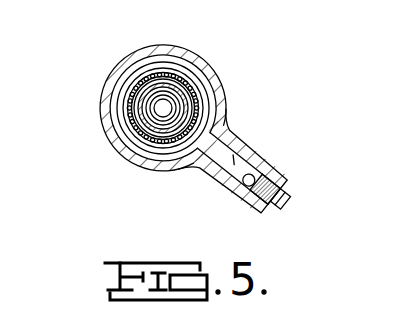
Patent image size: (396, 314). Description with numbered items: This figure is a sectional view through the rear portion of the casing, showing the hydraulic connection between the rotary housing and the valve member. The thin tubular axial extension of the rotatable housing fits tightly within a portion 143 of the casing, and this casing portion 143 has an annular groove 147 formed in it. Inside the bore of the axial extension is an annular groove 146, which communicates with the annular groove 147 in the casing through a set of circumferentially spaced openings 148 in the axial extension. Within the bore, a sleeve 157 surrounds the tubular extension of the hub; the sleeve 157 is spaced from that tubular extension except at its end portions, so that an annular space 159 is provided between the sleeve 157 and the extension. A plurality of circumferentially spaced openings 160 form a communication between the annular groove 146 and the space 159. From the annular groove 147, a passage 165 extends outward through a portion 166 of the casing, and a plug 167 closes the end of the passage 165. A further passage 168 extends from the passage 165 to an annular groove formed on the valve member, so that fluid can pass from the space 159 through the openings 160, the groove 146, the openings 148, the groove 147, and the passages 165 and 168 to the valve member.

The portion of the casing 143 is at (119, 66).
The annular groove 146 is at (191, 84).
The annular groove 147 is at (153, 49).
The openings 148 is at (167, 85).
The sleeve 157 is at (163, 108).
The space 159 is at (163, 108).
The openings 160 is at (218, 89).
The passage 165 is at (228, 142).
The portion of the casing 166 is at (280, 183).
The plug 167 is at (278, 198).
The passage 168 is at (256, 176).